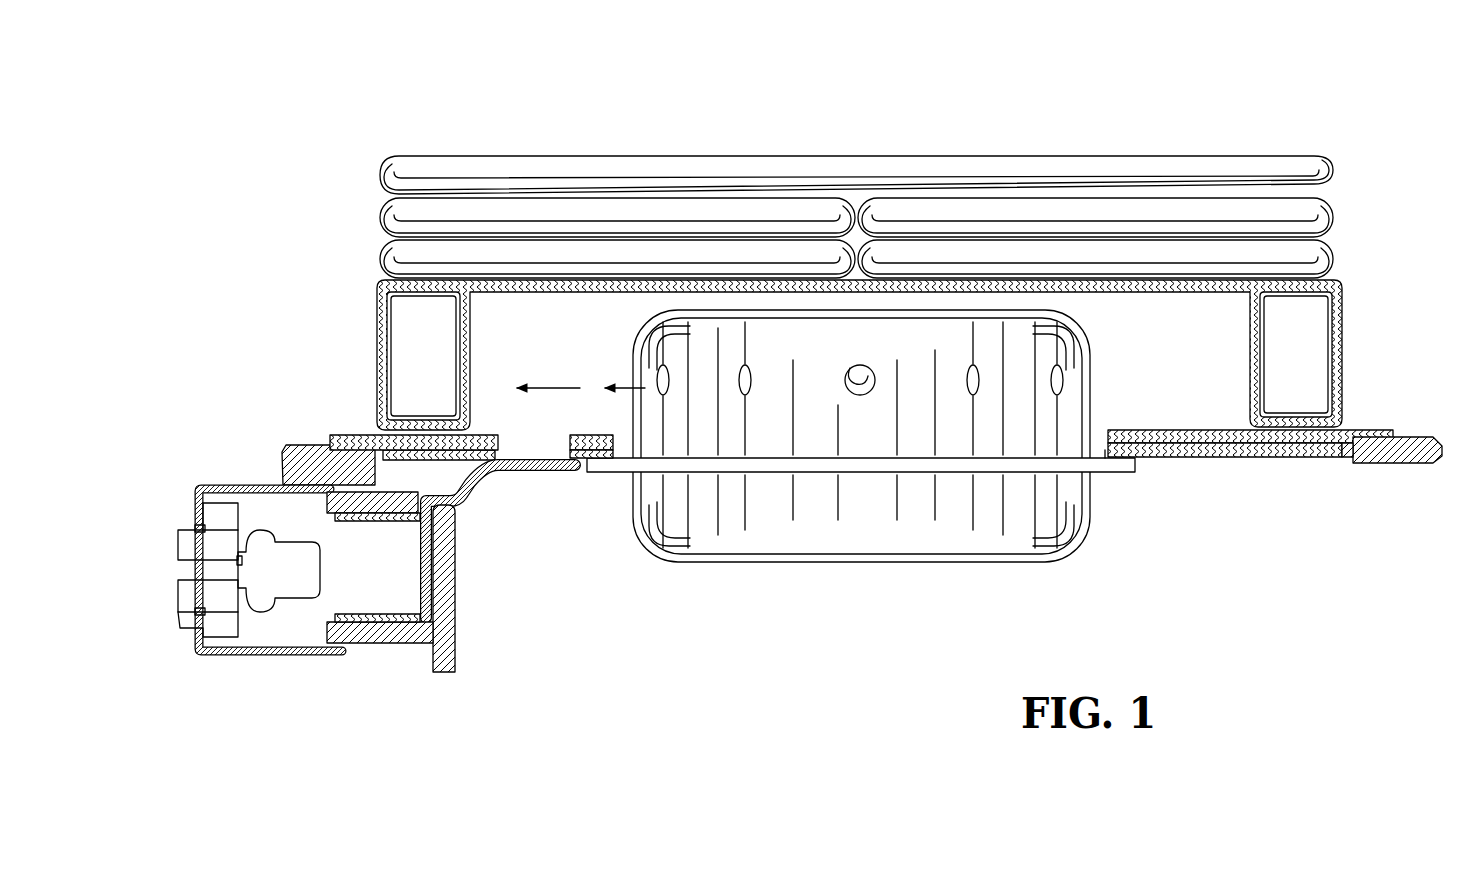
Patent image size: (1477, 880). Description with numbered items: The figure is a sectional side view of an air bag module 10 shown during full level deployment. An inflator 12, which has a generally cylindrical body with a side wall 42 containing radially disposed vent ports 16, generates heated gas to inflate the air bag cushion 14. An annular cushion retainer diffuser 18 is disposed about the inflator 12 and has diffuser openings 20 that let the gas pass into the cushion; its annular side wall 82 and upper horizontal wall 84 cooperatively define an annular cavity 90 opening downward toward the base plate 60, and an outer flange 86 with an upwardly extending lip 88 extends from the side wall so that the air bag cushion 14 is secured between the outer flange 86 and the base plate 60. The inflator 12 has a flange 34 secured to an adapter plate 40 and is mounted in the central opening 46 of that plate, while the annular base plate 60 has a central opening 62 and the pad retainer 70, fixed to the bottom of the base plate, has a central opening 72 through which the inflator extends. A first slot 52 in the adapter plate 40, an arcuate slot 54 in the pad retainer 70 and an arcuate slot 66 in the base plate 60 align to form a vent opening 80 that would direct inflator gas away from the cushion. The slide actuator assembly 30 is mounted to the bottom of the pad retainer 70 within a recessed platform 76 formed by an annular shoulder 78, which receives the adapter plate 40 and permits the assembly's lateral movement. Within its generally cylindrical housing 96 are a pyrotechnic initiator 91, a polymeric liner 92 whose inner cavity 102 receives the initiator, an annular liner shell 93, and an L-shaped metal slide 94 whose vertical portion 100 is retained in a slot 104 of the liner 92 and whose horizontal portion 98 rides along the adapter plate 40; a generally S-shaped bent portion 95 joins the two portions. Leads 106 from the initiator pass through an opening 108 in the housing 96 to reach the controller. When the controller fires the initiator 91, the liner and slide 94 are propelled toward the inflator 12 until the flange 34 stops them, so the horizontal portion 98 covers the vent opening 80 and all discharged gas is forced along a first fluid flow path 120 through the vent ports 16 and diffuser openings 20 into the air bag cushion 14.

The air bag module 10 is at (800, 104).
The inflator 12 is at (861, 462).
The air bag cushion 14 is at (950, 180).
The vent ports 16 is at (876, 380).
The cushion retainer diffuser 18 is at (1248, 293).
The diffuser openings 20 is at (1255, 367).
The slide actuator assembly 30 is at (215, 598).
The flange 34 is at (612, 472).
The adapter plate 40 is at (1285, 458).
The side wall 42 is at (818, 436).
The central opening 46 is at (1105, 459).
The first slot 52 is at (570, 452).
The arcuate slot 54 is at (570, 438).
The base plate 60 is at (1375, 430).
The central opening 62 is at (1108, 431).
The arcuate slot 66 is at (570, 438).
The pad retainer 70 is at (1420, 459).
The central opening 72 is at (617, 447).
The recessed platform 76 is at (1345, 459).
The annular shoulder 78 is at (1353, 464).
The vent opening 80 is at (505, 430).
The annular side wall 82 is at (460, 301).
The upper horizontal wall 84 is at (620, 294).
The outer flange 86 is at (428, 422).
The upwardly extending lip 88 is at (386, 398).
The annular cavity 90 is at (1145, 328).
The pyrotechnic initiator 91 is at (291, 582).
The liner 92 is at (378, 643).
The liner shell 93 is at (403, 630).
The slide 94 is at (497, 480).
The bent portion 95 is at (491, 478).
The housing 96 is at (317, 656).
The horizontal portion 98 is at (538, 472).
The vertical portion 100 is at (432, 585).
The inner cavity 102 is at (352, 556).
The slot 104 is at (456, 505).
The leads 106 is at (185, 549).
The opening 108 is at (203, 512).
The first fluid flow path 120 is at (487, 381).